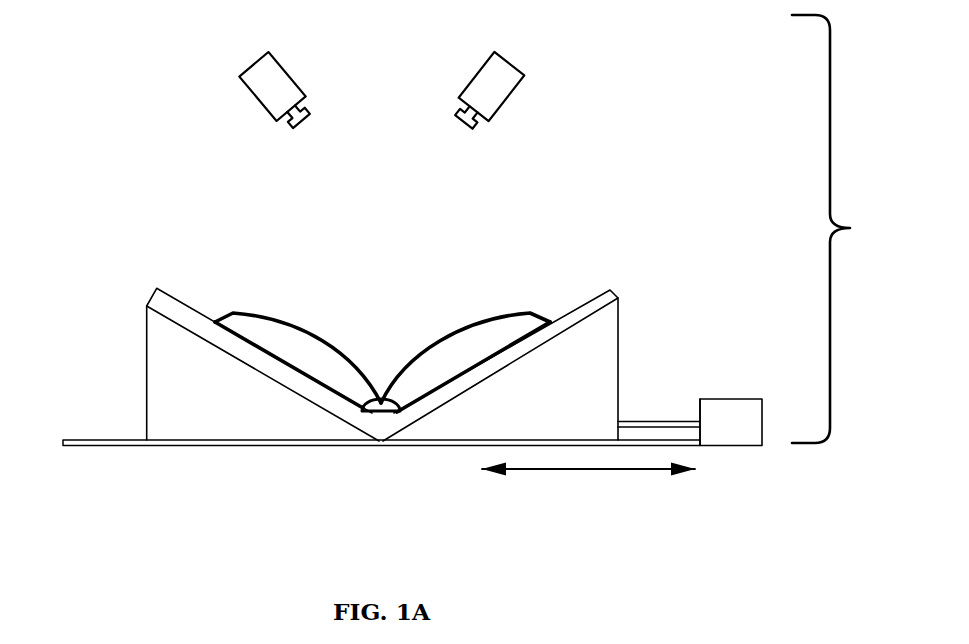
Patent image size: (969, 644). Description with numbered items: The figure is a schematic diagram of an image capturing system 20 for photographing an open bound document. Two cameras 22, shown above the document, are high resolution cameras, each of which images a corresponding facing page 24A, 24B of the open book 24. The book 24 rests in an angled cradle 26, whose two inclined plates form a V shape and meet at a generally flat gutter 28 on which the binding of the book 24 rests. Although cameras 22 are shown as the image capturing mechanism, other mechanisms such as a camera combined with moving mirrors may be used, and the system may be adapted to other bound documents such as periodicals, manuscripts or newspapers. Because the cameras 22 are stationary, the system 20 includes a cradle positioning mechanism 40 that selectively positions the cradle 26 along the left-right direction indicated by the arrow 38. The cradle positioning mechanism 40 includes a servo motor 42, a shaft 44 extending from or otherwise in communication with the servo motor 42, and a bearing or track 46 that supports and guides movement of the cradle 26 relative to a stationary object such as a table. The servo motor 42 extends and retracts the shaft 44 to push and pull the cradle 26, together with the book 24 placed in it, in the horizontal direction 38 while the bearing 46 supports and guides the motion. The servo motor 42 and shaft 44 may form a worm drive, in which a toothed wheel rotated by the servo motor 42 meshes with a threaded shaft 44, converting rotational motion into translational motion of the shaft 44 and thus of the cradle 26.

The image capturing system 20 is at (842, 229).
The cameras 22 is at (515, 63).
The book 24 is at (389, 326).
The facing page 24A is at (297, 326).
The facing page 24B is at (462, 327).
The angled cradle 26 is at (617, 297).
The gutter 28 is at (380, 409).
The arrow 38 is at (567, 470).
The cradle positioning mechanism 40 is at (751, 391).
The servo motor 42 is at (702, 398).
The shaft 44 is at (653, 419).
The bearing or track 46 is at (92, 438).